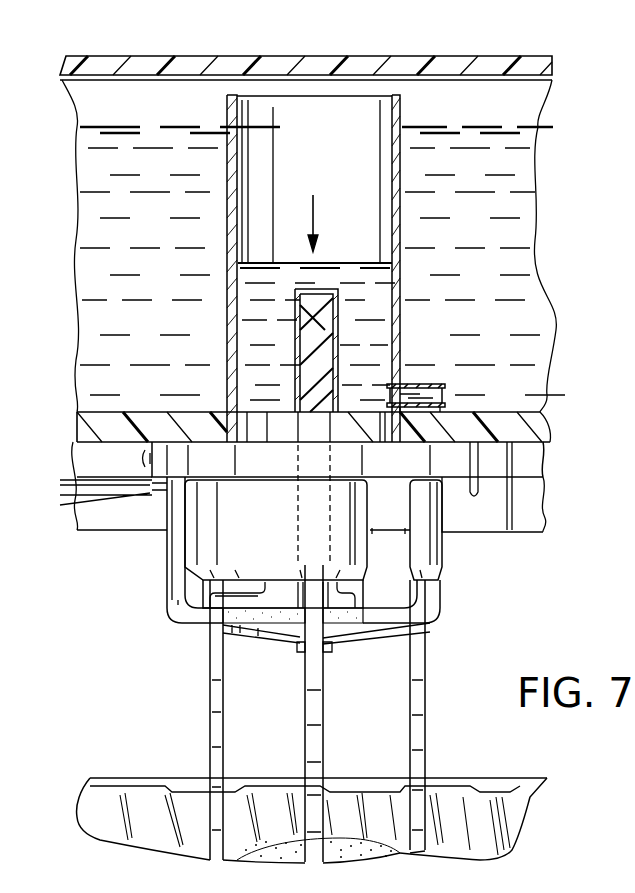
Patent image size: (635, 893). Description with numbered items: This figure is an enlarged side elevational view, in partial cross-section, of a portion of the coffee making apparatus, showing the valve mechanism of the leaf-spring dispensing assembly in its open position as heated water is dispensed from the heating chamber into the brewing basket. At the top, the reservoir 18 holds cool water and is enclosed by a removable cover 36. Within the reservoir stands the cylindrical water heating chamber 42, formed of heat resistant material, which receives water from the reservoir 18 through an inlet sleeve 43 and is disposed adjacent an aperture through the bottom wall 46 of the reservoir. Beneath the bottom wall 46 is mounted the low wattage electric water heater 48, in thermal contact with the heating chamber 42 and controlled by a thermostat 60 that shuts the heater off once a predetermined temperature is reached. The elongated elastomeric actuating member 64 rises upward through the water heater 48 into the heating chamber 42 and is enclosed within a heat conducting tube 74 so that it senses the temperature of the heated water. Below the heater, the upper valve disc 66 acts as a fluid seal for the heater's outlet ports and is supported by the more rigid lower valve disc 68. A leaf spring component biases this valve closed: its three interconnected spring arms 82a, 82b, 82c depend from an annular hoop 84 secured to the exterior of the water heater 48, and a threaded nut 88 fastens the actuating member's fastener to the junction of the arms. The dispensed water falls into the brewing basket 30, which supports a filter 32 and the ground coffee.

The removable cover 36 is at (190, 67).
The reservoir 18 is at (490, 277).
The water heating chamber 42 is at (395, 142).
The conducting tube 74 is at (295, 342).
The actuating member 64 is at (333, 372).
The inlet sleeve 43 is at (442, 387).
The bottom wall 46 is at (527, 427).
The annular hoop 84 is at (383, 460).
The thermostat 60 is at (170, 490).
The water heater 48 is at (427, 525).
The upper valve disc 66 is at (227, 610).
The lower valve disc 68 is at (250, 637).
The threaded nut 88 is at (307, 647).
The spring arm 82a is at (183, 630).
The spring arm 82b is at (352, 622).
The spring arm 82c is at (430, 630).
The brewing basket 30 is at (490, 778).
The filter 32 is at (512, 823).